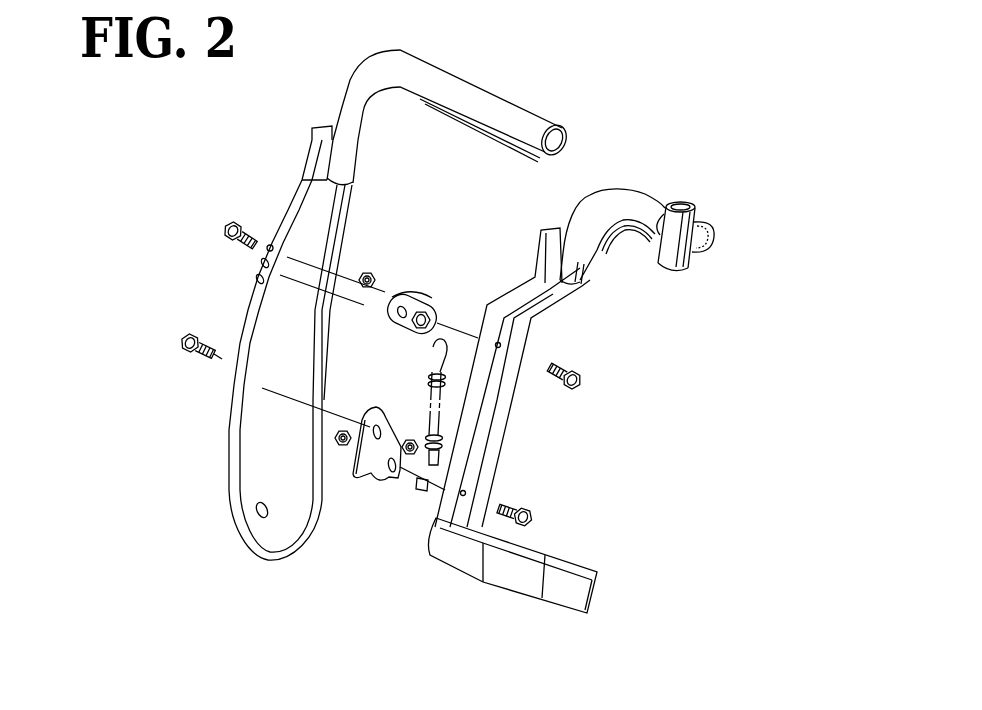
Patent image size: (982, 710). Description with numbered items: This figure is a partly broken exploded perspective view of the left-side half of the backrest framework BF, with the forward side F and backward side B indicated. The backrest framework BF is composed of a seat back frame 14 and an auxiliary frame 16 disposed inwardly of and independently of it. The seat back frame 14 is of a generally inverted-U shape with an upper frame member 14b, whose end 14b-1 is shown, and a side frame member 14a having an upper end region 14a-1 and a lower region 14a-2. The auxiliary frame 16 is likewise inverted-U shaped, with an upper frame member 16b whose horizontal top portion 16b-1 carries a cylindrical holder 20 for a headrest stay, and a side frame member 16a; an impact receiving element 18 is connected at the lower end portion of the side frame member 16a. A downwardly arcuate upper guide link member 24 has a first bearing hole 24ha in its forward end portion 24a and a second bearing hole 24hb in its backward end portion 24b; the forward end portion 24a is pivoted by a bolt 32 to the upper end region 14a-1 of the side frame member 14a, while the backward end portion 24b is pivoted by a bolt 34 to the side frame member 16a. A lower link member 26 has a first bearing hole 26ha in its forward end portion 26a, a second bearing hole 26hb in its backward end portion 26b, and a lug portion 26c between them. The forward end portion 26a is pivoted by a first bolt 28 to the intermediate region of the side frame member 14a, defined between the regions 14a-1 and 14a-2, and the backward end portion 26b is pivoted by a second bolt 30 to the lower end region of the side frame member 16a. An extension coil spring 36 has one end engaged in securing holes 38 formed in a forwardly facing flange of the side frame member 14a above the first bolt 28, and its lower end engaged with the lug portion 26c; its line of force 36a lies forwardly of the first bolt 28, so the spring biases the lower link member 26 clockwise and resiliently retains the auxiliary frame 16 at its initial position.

The seat back frame 14 is at (303, 152).
The side frame member 14a is at (228, 462).
The upper end region 14a-1 is at (288, 192).
The lower region 14a-2 is at (287, 510).
The upper frame member 14b is at (345, 85).
The end of tube portion 14b-1 is at (537, 118).
The auxiliary frame 16 is at (521, 258).
The side frame member 16a is at (505, 448).
The upper frame member 16b is at (568, 208).
The horizontal top portion 16b-1 is at (668, 205).
The impact receiving element 18 is at (570, 578).
The cylindrical holder 20 is at (672, 262).
The upper guide link member 24 is at (423, 284).
The forward end portion 24a is at (350, 320).
The backward end portion 24b is at (426, 290).
The first bearing hole 24ha is at (395, 292).
The second bearing hole 24hb is at (440, 302).
The lower link member 26 is at (356, 452).
The forward end portion 26a is at (358, 420).
The backward end portion 26b is at (418, 492).
The lug portion 26c is at (370, 483).
The first bearing hole 26ha is at (376, 408).
The second bearing hole 26hb is at (402, 470).
The first bolt 28 is at (180, 345).
The second bolt 30 is at (534, 516).
The bolt 32 is at (224, 226).
The bolt 34 is at (582, 375).
The extension coil spring 36 is at (447, 345).
The line of force 36a is at (440, 418).
The securing holes 38 is at (255, 280).
The backward side B is at (781, 399).
The forward side F is at (84, 429).
The backrest framework BF is at (672, 110).